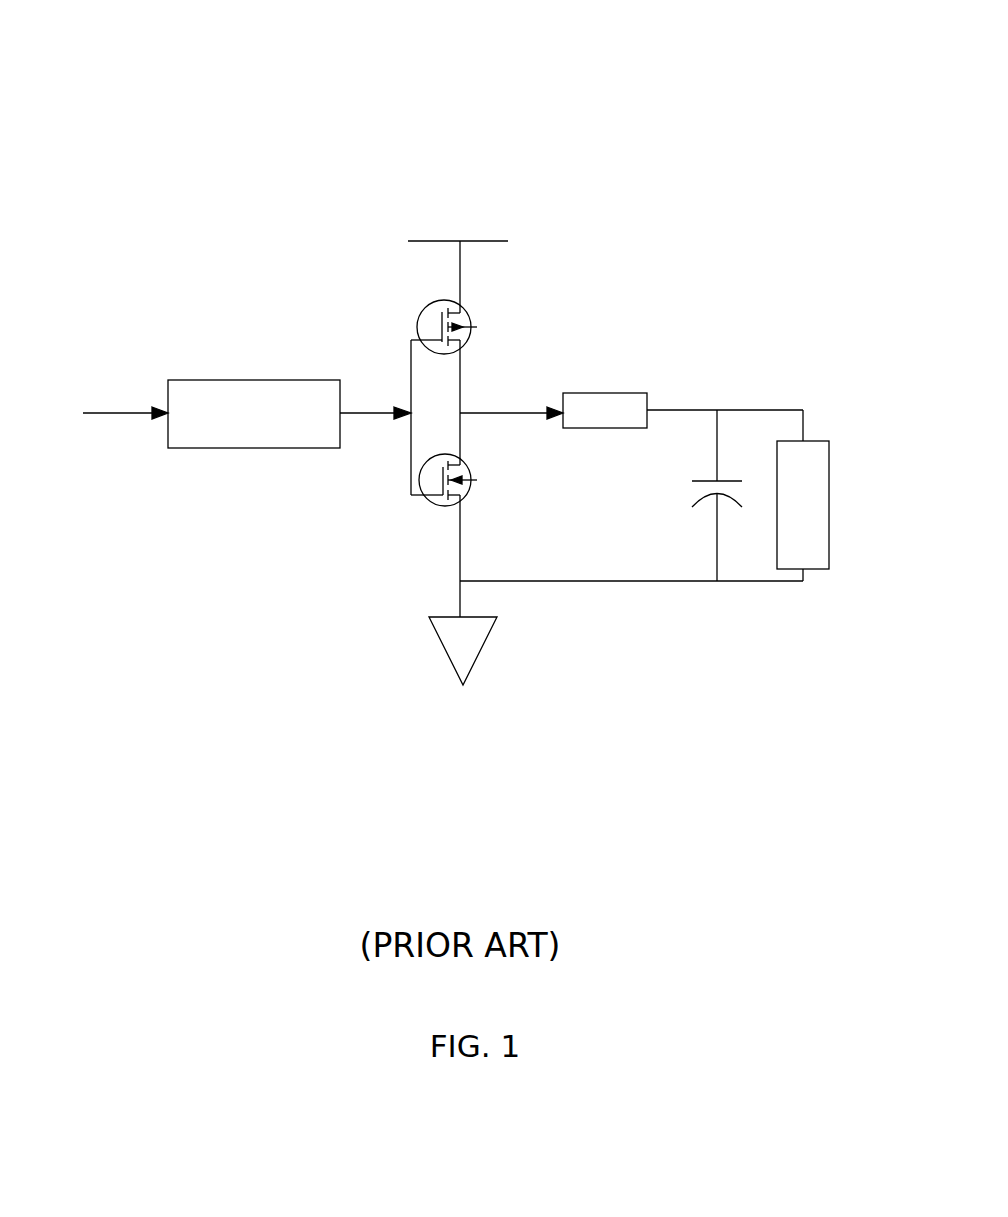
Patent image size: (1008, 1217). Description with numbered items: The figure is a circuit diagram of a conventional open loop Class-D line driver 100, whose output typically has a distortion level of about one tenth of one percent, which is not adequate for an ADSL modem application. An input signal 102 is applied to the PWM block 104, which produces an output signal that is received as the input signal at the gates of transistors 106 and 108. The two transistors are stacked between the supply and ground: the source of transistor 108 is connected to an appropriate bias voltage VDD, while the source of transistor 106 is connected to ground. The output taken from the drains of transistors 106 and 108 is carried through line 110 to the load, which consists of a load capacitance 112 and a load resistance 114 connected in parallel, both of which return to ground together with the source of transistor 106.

The prior art switching regulator circuit 100 is at (508, 33).
The signal 102 is at (118, 405).
The PWM block 104 is at (256, 381).
The transistor 106 is at (428, 500).
The transistor 108 is at (420, 311).
The line 110 is at (605, 392).
The load capacitance 112 is at (716, 476).
The load resistance 114 is at (836, 475).